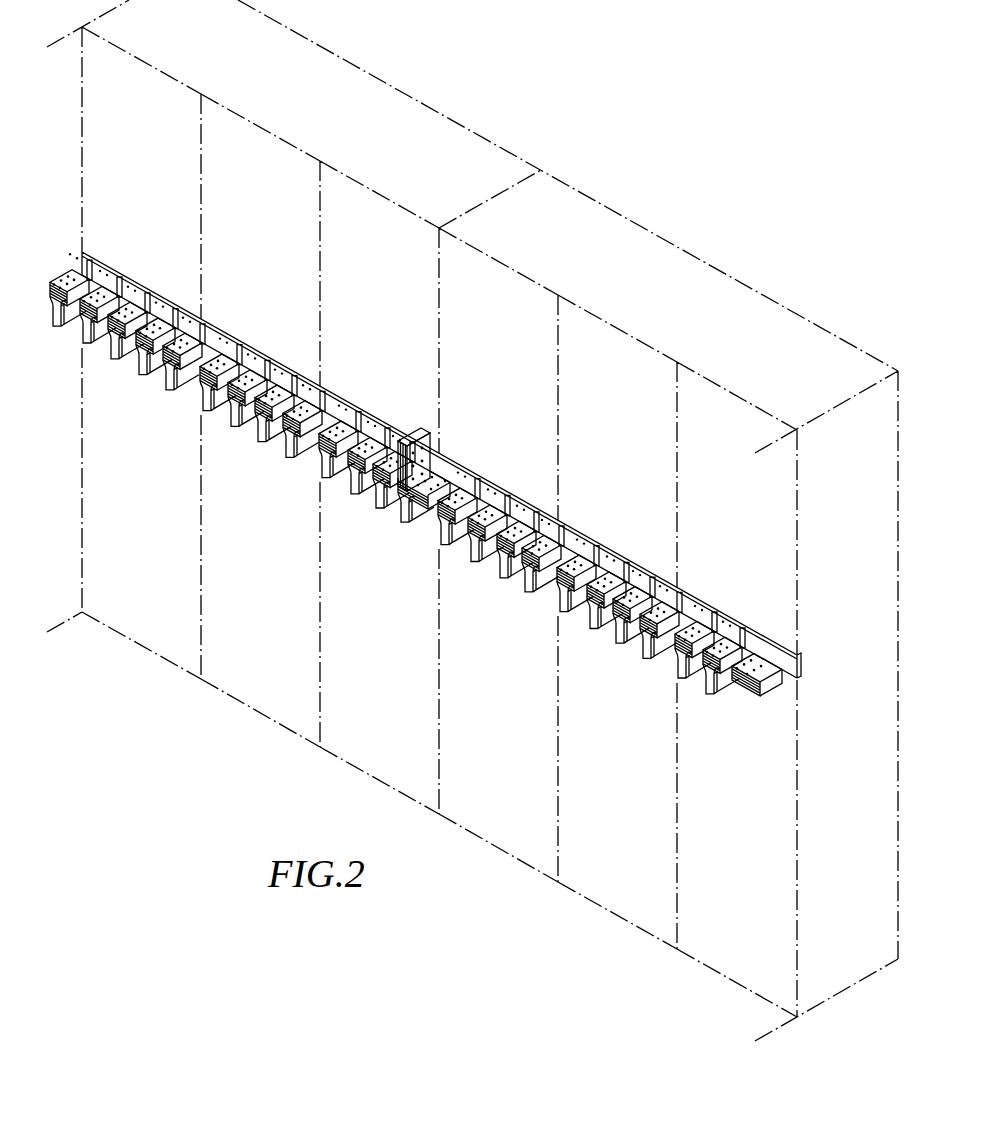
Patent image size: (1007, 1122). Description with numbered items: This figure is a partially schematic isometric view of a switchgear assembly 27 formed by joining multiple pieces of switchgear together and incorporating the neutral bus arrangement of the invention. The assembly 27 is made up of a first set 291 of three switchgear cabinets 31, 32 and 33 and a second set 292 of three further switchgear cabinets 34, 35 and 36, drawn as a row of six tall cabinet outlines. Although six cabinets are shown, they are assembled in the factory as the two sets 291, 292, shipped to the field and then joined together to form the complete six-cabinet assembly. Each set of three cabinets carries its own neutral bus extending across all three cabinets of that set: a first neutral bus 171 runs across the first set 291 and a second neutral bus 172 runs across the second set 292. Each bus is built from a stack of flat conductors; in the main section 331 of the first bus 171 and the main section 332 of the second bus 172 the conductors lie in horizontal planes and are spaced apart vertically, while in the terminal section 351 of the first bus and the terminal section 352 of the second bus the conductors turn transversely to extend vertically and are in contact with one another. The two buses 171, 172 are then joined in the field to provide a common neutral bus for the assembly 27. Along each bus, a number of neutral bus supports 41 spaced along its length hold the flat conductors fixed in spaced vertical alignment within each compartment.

The switchgear assembly 27 is at (472, 520).
The first set of switchgear cabinets 291 is at (260, 408).
The second set of switchgear cabinets 292 is at (618, 609).
The switchgear cabinet 31 is at (152, 76).
The switchgear cabinet 32 is at (253, 144).
The switchgear cabinet 33 is at (358, 195).
The switchgear cabinet 34 is at (478, 290).
The switchgear cabinet 35 is at (593, 342).
The switchgear cabinet 36 is at (715, 414).
The first neutral bus 171 is at (250, 387).
The second neutral bus 172 is at (610, 602).
The main section of first neutral bus 331 is at (287, 444).
The main section of second neutral bus 332 is at (515, 569).
The terminal section of first neutral bus 351 is at (408, 430).
The terminal section of second neutral bus 352 is at (429, 450).
The neutral bus support 41 is at (245, 421).